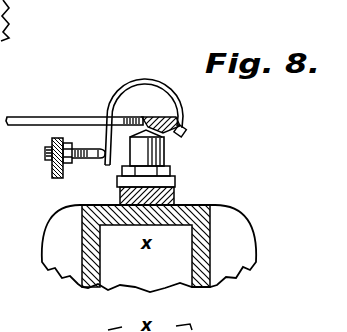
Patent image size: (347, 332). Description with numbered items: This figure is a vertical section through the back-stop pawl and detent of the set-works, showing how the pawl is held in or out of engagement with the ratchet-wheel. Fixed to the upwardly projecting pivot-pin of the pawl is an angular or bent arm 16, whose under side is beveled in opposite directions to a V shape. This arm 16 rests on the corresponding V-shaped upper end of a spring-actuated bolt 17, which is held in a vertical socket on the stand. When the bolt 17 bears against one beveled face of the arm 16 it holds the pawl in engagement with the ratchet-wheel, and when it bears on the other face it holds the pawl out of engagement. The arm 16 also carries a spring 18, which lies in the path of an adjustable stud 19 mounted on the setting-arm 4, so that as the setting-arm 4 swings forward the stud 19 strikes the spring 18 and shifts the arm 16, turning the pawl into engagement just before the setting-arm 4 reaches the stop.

The setting-arm 4 is at (50, 171).
The angular or bent arm 16 is at (71, 109).
The spring-actuated bolt 17 is at (165, 144).
The spring 18 is at (144, 74).
The adjustable stud 19 is at (85, 144).